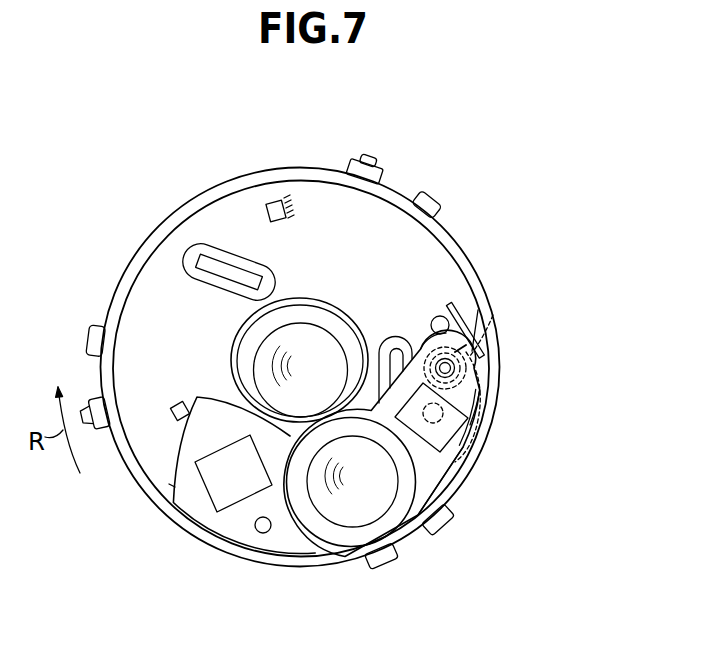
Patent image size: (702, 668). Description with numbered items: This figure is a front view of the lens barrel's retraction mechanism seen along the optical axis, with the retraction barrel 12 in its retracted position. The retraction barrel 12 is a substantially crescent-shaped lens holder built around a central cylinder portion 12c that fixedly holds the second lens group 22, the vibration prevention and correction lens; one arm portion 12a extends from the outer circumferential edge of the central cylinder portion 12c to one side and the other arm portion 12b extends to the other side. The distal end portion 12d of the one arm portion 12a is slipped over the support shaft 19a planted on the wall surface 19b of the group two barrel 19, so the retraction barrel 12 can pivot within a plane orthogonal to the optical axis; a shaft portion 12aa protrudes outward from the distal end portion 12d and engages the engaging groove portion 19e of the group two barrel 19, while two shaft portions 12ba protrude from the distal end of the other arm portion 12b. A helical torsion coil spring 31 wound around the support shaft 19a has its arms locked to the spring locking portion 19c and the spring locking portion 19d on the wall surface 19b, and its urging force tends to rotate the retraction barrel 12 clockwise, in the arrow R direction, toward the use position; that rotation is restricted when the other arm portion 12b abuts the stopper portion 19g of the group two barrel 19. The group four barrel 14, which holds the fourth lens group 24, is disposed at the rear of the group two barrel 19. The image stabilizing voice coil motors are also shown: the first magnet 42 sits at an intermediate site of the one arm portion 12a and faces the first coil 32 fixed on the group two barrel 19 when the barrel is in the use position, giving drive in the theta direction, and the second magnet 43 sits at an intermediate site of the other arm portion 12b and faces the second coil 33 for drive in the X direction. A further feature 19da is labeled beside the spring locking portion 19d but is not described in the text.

The retraction barrel 12 is at (455, 517).
The one arm portion 12a is at (432, 494).
The shaft portion 12aa is at (478, 310).
The other arm portion 12b is at (202, 513).
The shaft portions 12ba is at (173, 487).
The central cylinder portion 12c is at (300, 528).
The distal end portion 12d is at (484, 364).
The group 4 barrel 14 is at (294, 312).
The group 2 barrel 19 is at (393, 200).
The support shaft 19a is at (456, 373).
The wall surface 19b is at (426, 340).
The spring locking portion 19c is at (436, 316).
The spring locking portion 19d is at (482, 427).
The recess edge 19da is at (460, 356).
The engaging groove portion 19e is at (493, 315).
The stopper portion 19g is at (273, 203).
The second lens group 22 is at (337, 505).
The fourth lens group 24 is at (273, 363).
The helical torsion coil spring 31 is at (457, 327).
The first coil 32 is at (393, 339).
The second coil 33 is at (190, 250).
The first magnet 42 is at (450, 444).
The second magnet 43 is at (233, 496).